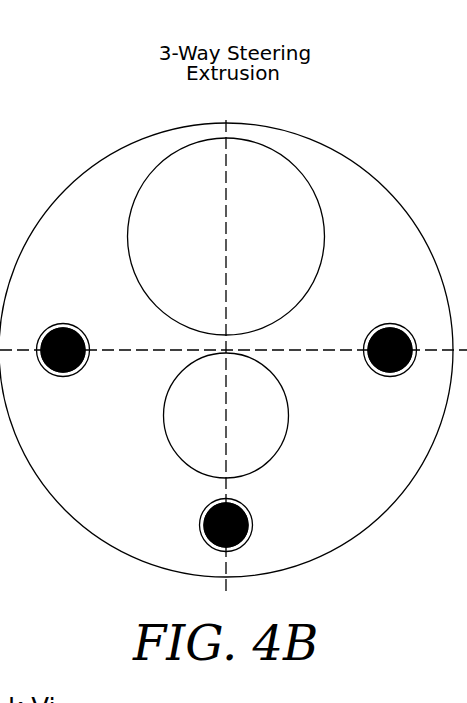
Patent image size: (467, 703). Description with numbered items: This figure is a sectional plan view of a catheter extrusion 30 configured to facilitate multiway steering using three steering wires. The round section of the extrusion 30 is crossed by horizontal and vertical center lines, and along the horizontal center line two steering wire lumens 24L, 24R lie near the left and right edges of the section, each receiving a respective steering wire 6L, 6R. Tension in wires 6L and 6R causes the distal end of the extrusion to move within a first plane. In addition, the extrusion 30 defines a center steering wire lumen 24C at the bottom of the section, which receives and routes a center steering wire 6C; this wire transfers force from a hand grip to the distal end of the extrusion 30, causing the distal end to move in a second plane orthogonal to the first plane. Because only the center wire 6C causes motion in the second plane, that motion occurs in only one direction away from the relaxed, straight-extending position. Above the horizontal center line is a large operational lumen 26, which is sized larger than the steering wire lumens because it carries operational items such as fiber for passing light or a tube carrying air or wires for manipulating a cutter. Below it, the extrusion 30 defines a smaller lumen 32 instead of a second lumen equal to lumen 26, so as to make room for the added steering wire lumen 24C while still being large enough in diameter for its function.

The extrusion 30 is at (226, 350).
The operational lumen 26 is at (255, 236).
The smaller lumen 32 is at (254, 415).
The steering wire lumen 24L is at (63, 322).
The steering wire lumen 24R is at (394, 323).
The center steering wire lumen 24C is at (202, 515).
The steering wire 6L is at (86, 360).
The steering wire 6R is at (368, 361).
The center steering wire 6C is at (251, 521).